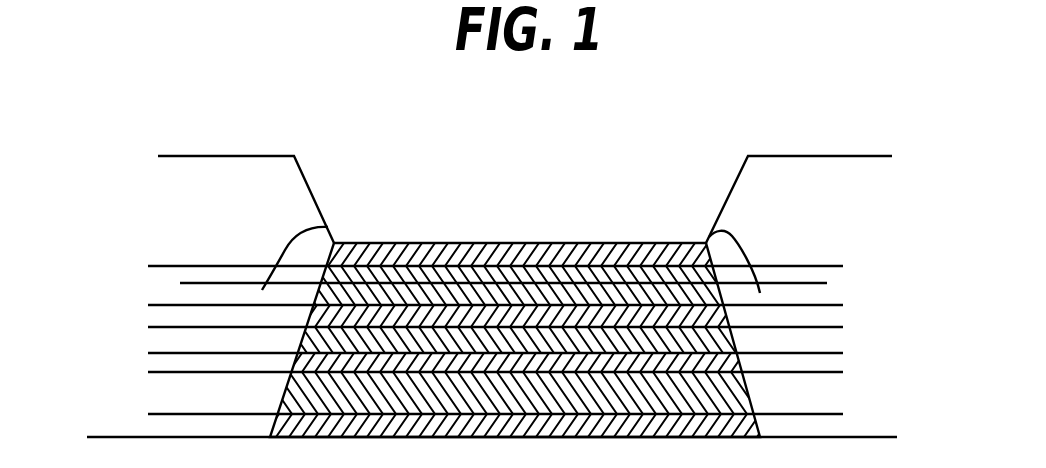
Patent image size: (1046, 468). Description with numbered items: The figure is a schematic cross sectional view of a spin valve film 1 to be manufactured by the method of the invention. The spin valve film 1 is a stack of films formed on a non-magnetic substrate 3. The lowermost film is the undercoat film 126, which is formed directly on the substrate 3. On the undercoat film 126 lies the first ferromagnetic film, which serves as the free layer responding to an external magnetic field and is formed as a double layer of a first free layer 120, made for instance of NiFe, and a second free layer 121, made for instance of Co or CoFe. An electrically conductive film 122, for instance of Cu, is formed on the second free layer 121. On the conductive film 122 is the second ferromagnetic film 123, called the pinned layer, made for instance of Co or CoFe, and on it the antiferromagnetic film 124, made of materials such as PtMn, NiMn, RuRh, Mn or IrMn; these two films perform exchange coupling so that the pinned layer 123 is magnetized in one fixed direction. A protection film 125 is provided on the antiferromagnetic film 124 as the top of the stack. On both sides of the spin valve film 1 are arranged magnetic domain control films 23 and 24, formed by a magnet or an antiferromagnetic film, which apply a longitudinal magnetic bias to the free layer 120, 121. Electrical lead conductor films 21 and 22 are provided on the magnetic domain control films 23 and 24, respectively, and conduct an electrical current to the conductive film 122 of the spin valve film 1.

The spin valve film 1 is at (472, 236).
The non-magnetic substrate 3 is at (140, 448).
The electrical lead conductor film 21 is at (287, 182).
The electrical lead conductor film 22 is at (750, 188).
The magnetic domain control film 23 is at (328, 227).
The magnetic domain control film 24 is at (709, 237).
The first free layer 120 is at (154, 372).
The second free layer 121 is at (841, 335).
The electrically conductive film 122 is at (154, 316).
The second ferromagnetic film 123 is at (841, 292).
The antiferromagnetic film 124 is at (154, 266).
The protection film 125 is at (841, 228).
The undercoat film 126 is at (841, 398).